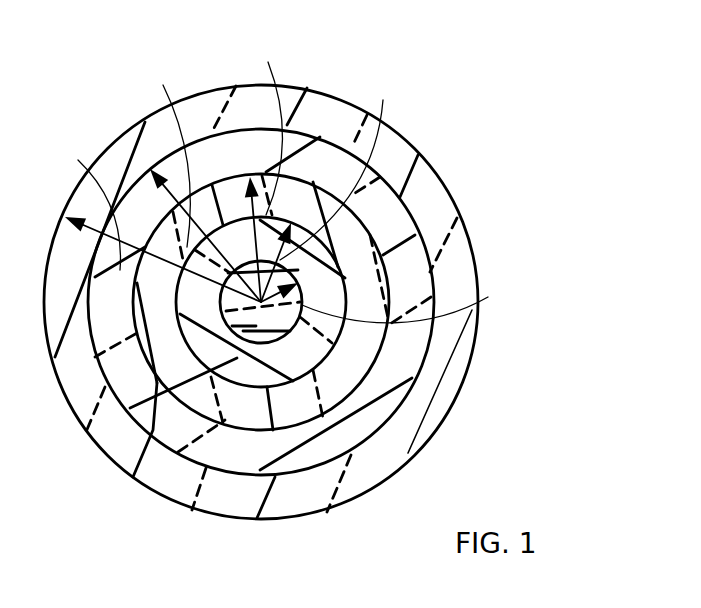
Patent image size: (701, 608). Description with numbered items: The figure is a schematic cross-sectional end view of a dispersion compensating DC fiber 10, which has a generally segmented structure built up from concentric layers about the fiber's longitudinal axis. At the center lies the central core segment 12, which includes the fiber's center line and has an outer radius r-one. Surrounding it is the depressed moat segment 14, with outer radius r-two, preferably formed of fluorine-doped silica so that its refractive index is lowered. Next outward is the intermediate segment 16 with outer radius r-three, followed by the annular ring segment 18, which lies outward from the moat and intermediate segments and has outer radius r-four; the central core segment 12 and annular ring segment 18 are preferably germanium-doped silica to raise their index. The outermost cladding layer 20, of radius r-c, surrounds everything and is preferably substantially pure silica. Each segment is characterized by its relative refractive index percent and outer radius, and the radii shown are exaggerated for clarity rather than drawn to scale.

The DC fiber 10 is at (500, 45).
The central core segment 12 is at (250, 322).
The depressed moat segment 14 is at (221, 328).
The intermediate segment 16 is at (247, 405).
The annular ring segment 18 is at (293, 453).
The cladding layer 20 is at (373, 458).